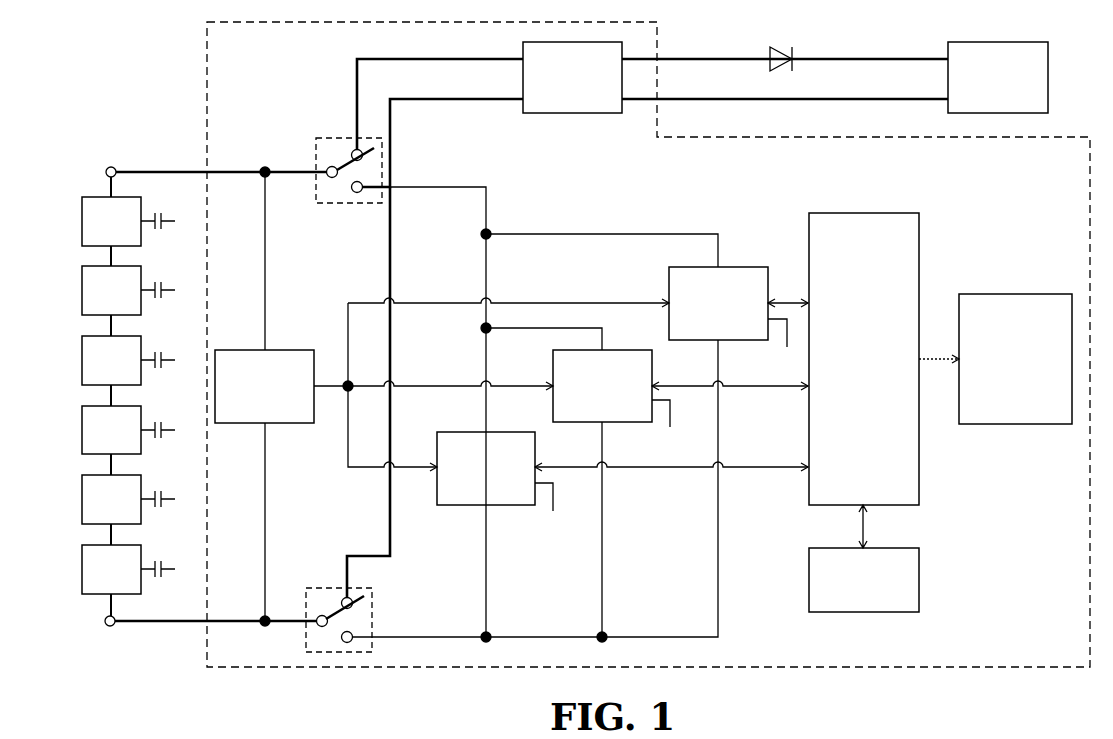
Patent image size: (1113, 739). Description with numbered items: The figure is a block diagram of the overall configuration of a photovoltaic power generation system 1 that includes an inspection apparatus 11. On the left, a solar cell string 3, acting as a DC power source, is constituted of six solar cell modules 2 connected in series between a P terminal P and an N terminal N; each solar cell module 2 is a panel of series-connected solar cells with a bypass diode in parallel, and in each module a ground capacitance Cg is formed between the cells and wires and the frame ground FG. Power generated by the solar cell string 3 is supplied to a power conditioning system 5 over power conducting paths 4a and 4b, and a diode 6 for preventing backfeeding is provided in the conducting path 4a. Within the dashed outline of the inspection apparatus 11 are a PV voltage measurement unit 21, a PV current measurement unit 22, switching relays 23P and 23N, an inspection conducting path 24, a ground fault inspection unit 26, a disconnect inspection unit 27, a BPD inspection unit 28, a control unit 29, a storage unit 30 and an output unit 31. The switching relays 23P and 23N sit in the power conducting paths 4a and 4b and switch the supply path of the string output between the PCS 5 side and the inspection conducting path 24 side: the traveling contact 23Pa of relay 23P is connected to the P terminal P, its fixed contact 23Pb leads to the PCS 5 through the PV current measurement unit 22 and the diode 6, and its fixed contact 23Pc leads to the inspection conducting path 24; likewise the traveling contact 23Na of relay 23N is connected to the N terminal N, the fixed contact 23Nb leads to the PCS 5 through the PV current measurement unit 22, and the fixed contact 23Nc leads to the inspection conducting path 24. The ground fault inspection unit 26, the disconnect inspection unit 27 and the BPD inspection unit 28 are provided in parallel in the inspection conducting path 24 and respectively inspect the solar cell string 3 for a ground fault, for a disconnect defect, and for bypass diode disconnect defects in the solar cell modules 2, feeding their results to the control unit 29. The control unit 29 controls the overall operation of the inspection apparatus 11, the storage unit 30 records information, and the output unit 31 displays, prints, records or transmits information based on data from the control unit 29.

The photovoltaic power generation system 1 is at (104, 56).
The solar cell module 2 is at (121, 198).
The solar cell string 3 is at (140, 150).
The power conducting path 4a is at (422, 59).
The power conducting path 4b is at (422, 99).
The power conditioning system 5 is at (1018, 42).
The diode 6 is at (774, 50).
The inspection apparatus 11 is at (1050, 136).
The PV voltage measurement unit 21 is at (281, 350).
The PV current measurement unit 22 is at (595, 113).
The switching relay 23P is at (320, 140).
The traveling contact 23Pa is at (331, 165).
The fixed contact 23Pb is at (362, 149).
The fixed contact 23Pc is at (372, 196).
The switching relay 23N is at (362, 588).
The traveling contact 23Na is at (317, 628).
The fixed contact 23Nb is at (342, 598).
The fixed contact 23Nc is at (354, 640).
The inspection conducting path 24 is at (406, 187).
The ground fault inspection unit 26 is at (501, 432).
The disconnect inspection unit 27 is at (620, 350).
The BPD inspection unit 28 is at (756, 267).
The control unit 29 is at (878, 213).
The storage unit 30 is at (878, 548).
The output unit 31 is at (1030, 294).
The P terminal P is at (108, 169).
The N terminal N is at (114, 628).
The ground capacitance Cg is at (158, 388).
The frame ground FG is at (487, 395).